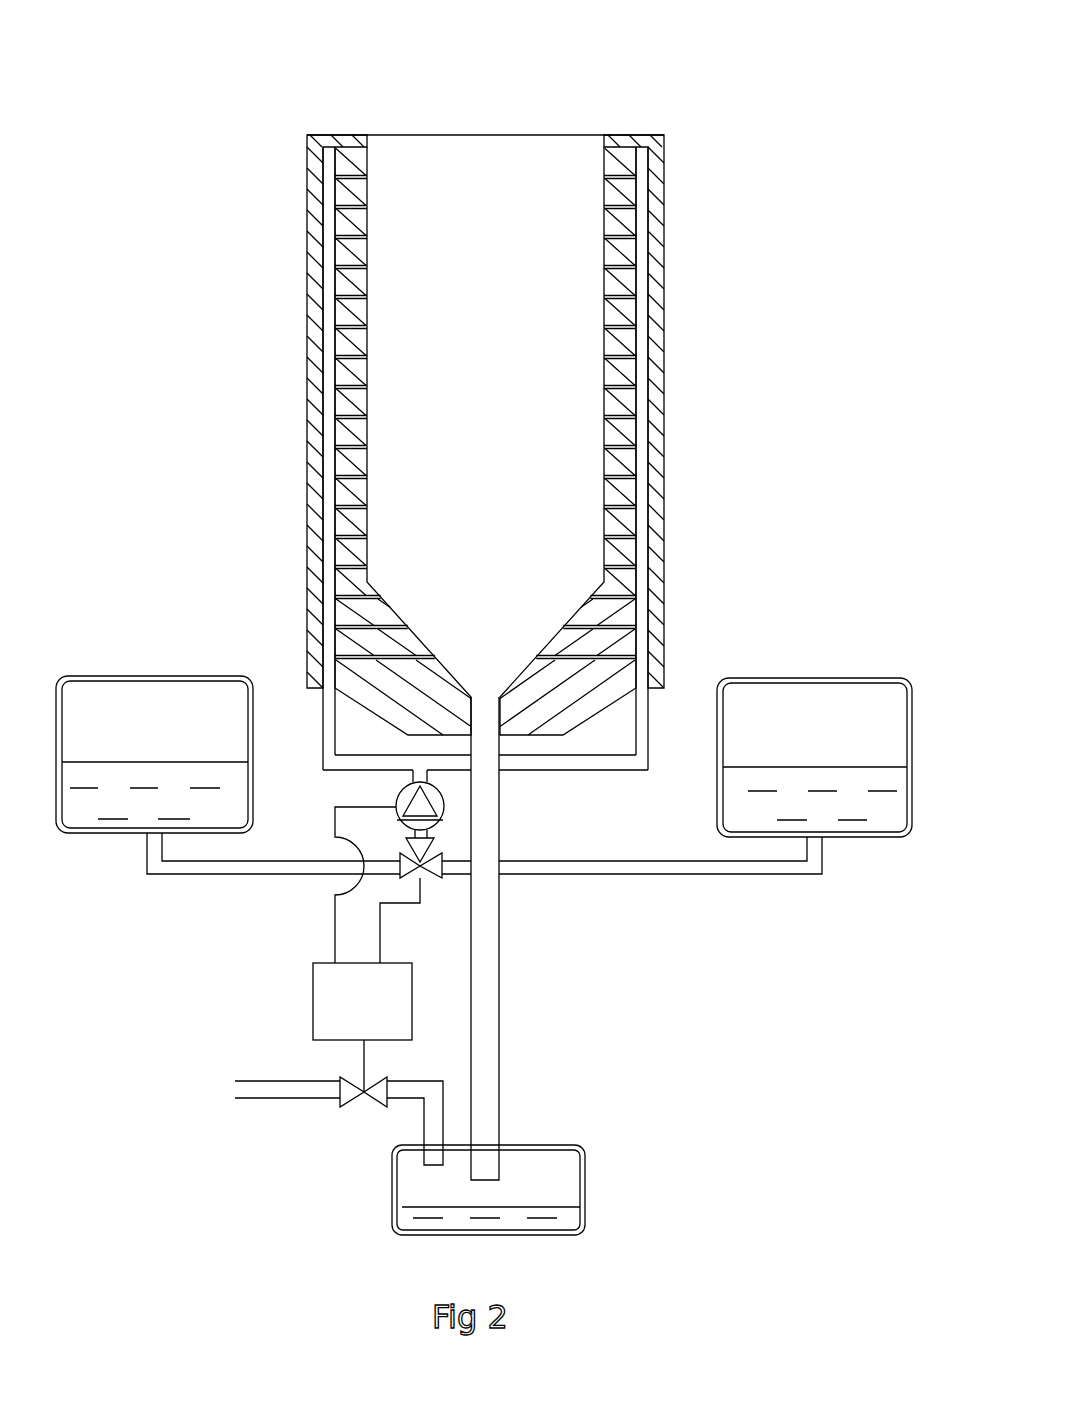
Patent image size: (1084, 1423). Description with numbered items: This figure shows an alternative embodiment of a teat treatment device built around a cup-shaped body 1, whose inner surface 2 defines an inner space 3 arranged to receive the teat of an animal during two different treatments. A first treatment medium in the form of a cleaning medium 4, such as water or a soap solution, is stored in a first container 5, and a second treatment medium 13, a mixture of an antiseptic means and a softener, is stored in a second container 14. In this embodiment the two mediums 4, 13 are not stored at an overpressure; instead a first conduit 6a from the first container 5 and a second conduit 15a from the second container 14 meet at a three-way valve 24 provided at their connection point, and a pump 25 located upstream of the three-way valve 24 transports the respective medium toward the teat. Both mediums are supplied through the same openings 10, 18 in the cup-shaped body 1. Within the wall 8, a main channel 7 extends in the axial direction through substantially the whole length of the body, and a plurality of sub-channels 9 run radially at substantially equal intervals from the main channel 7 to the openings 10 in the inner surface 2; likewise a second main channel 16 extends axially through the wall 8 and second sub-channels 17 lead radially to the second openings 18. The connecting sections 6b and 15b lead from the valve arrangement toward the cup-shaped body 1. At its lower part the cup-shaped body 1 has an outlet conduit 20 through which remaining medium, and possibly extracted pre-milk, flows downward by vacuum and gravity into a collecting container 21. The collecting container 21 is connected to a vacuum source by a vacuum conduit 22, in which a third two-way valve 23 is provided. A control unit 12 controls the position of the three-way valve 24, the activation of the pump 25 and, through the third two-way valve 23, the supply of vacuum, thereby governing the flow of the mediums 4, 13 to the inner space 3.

The cup-shaped body 1 is at (627, 99).
The inner surface 2 is at (366, 465).
The inner space 3 is at (497, 547).
The cleaning medium 4 is at (130, 807).
The first container 5 is at (158, 730).
The first conduit 6a is at (290, 865).
The supply line section 6b is at (333, 757).
The main channel 7 is at (317, 477).
The wall 8 is at (315, 340).
The sub-channels 9 is at (367, 231).
The openings 10 is at (366, 325).
The control unit 12 is at (357, 989).
The second treatment medium 13 is at (870, 807).
The second container 14 is at (820, 732).
The second conduit 15a is at (662, 867).
The supply line section 15b is at (620, 763).
The second main channel 16 is at (633, 463).
The second sub-channels 17 is at (608, 228).
The second openings 18 is at (607, 330).
The outlet conduit 20 is at (482, 903).
The collecting container 21 is at (560, 1197).
The vacuum conduit 22 is at (273, 1092).
The third two-way valve 23 is at (363, 1093).
The three-way valve 24 is at (419, 880).
The pump 25 is at (415, 803).